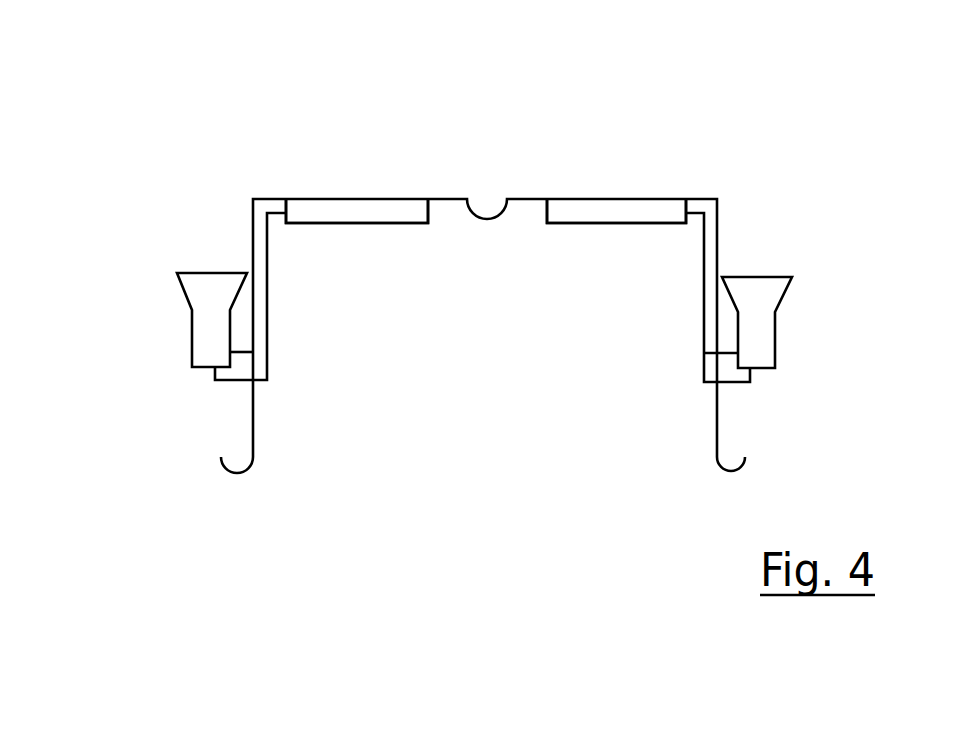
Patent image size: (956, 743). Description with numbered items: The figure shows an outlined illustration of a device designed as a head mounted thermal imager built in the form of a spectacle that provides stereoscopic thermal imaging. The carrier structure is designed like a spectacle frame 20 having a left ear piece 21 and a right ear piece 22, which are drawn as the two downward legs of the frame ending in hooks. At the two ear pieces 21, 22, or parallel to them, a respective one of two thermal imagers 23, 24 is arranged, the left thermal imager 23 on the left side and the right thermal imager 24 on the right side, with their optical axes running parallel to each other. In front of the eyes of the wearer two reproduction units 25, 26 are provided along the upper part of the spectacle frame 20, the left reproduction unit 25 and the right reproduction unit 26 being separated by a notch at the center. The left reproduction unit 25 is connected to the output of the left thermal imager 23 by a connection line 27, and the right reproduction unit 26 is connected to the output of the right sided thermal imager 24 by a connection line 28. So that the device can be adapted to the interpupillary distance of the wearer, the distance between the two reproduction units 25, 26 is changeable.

The spectacle frame 20 is at (715, 203).
The left ear piece 21 is at (252, 442).
The right ear piece 22 is at (715, 443).
The left thermal imager 23 is at (208, 342).
The right thermal imager 24 is at (760, 343).
The left reproduction unit 25 is at (335, 207).
The right reproduction unit 26 is at (575, 208).
The connection line 27 is at (262, 340).
The connection line 28 is at (703, 368).